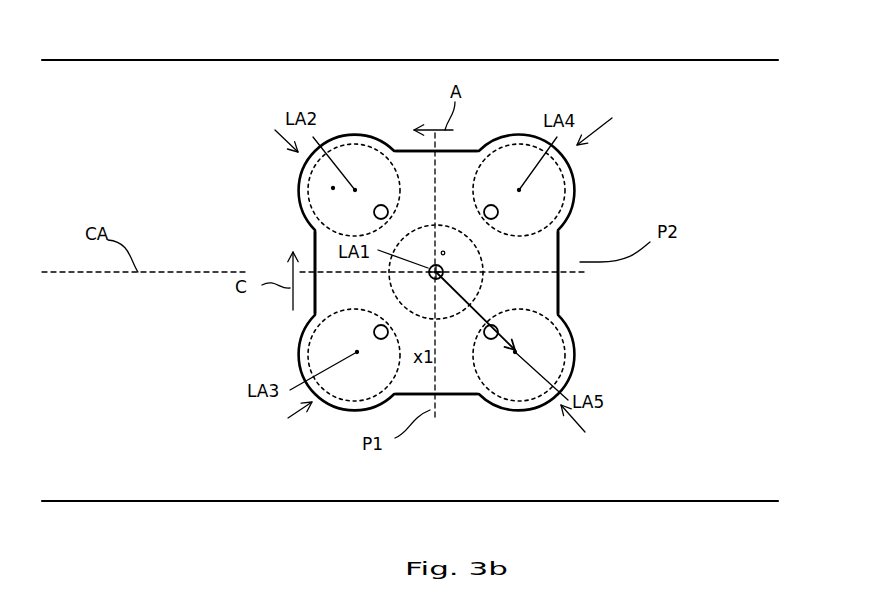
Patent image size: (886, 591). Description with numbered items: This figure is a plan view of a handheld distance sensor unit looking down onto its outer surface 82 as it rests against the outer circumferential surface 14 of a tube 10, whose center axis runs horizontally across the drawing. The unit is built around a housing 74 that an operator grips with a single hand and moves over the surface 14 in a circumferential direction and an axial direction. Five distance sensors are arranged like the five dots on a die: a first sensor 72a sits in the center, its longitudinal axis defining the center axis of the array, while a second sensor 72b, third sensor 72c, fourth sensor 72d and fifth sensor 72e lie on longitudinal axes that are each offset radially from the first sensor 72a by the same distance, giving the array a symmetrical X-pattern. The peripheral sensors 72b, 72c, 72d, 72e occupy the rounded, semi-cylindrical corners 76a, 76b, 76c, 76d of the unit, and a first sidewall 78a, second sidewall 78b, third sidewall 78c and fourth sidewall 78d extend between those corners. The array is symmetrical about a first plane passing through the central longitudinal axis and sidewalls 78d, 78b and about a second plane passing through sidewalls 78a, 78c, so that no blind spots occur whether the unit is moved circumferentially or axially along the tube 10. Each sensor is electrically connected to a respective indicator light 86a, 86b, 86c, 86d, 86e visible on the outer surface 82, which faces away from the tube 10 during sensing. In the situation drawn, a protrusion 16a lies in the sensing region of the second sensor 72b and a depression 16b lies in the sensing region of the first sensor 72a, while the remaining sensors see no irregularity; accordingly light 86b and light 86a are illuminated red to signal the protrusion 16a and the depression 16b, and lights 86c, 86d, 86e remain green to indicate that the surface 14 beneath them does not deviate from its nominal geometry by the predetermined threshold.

The tube 10 is at (178, 438).
The outer circumferential surface 14 is at (148, 60).
The protrusion 16a is at (333, 188).
The depression 16b is at (443, 251).
The first sensor 72a is at (478, 250).
The second sensor 72b is at (312, 173).
The third sensor 72c is at (316, 344).
The fourth sensor 72d is at (553, 188).
The fifth sensor 72e is at (566, 345).
The housing 74 is at (560, 285).
The corner 76a is at (270, 129).
The corner 76b is at (280, 421).
The corner 76c is at (587, 427).
The corner 76d is at (610, 126).
The first sidewall 78a is at (314, 248).
The second sidewall 78b is at (452, 396).
The third sidewall 78c is at (561, 253).
The fourth sidewall 78d is at (468, 152).
The outer surface 82 is at (520, 298).
The light 86a is at (430, 278).
The light 86b is at (374, 212).
The light 86c is at (374, 332).
The light 86d is at (498, 212).
The light 86e is at (491, 339).